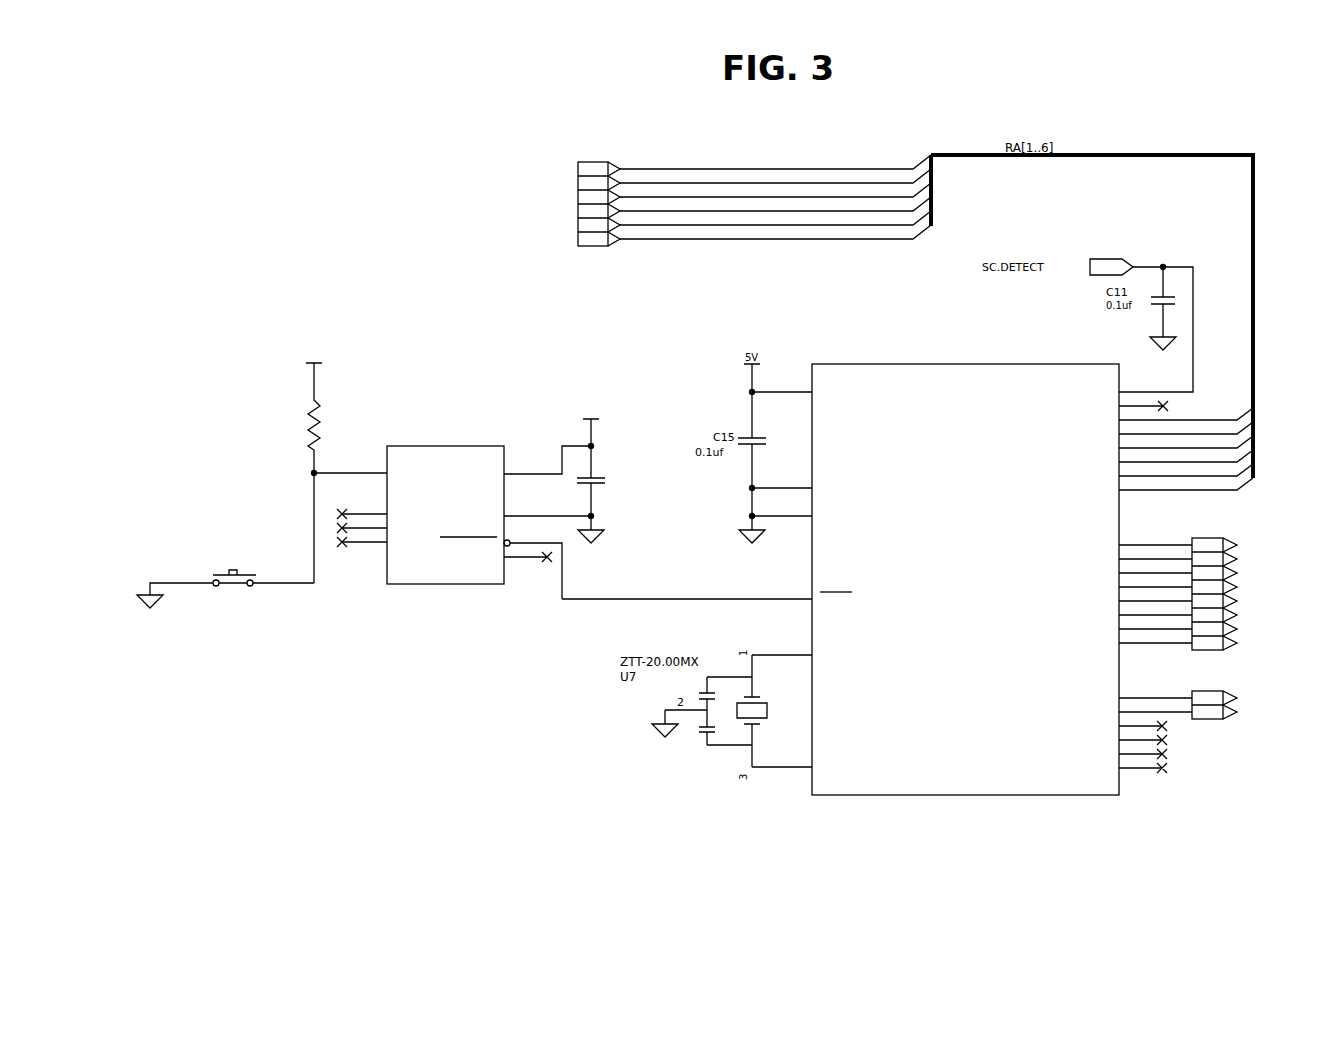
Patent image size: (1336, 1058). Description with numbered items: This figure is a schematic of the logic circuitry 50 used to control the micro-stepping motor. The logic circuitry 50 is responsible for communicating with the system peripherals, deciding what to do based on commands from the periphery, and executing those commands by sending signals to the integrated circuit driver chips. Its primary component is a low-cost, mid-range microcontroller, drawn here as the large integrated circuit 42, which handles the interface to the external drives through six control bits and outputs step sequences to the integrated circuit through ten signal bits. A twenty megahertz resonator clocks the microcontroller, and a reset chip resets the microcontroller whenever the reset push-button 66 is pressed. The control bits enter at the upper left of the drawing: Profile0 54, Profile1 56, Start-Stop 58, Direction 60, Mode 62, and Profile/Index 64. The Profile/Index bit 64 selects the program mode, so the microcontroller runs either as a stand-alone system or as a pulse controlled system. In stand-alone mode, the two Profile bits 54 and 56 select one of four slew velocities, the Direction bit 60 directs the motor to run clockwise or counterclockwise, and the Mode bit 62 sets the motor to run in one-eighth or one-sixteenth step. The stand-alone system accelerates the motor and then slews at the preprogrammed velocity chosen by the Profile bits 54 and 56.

The microcontroller PIC16C63A 42 is at (1005, 817).
The logic circuitry 50 is at (484, 742).
The Profile0 control bit 54 is at (480, 150).
The Profile1 control bit 56 is at (388, 180).
The Start-Stop control bit 58 is at (380, 195).
The Direction control bit 60 is at (455, 214).
The Mode control bit 62 is at (475, 224).
The Profile/Index control bit 64 is at (497, 253).
The reset push-button 66 is at (264, 573).